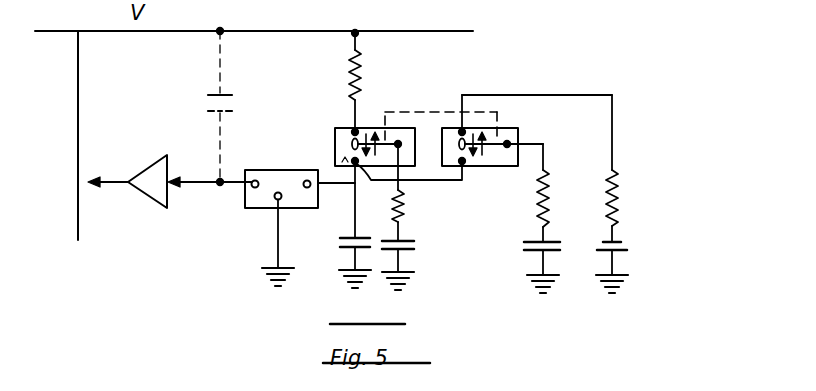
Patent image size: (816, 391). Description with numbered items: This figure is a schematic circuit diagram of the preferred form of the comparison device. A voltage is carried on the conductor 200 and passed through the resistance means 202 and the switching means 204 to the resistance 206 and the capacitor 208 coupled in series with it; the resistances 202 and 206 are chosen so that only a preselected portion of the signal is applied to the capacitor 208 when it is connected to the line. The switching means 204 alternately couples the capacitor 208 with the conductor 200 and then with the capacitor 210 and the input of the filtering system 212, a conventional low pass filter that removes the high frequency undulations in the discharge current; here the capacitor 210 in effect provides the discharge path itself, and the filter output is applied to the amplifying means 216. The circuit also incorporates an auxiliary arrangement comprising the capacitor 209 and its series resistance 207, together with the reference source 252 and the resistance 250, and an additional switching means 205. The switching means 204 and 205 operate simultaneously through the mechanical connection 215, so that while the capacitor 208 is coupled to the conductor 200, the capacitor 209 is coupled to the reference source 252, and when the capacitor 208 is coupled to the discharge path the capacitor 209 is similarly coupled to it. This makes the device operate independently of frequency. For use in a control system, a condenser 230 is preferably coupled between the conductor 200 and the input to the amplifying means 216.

The conductor 200 is at (458, 32).
The resistance means 202 is at (348, 73).
The switching means 204 is at (347, 128).
The switching means 205 is at (504, 138).
The resistance 206 is at (404, 210).
The series resistance 207 is at (536, 204).
The capacitor 208 is at (414, 246).
The capacitor 209 is at (524, 256).
The capacitor 210 is at (340, 245).
The filtering system 212 is at (257, 208).
The mechanical connection 215 is at (434, 112).
The amplifying means 216 is at (146, 177).
The condenser 230 is at (195, 107).
The resistance 250 is at (618, 200).
The reference source 252 is at (627, 249).